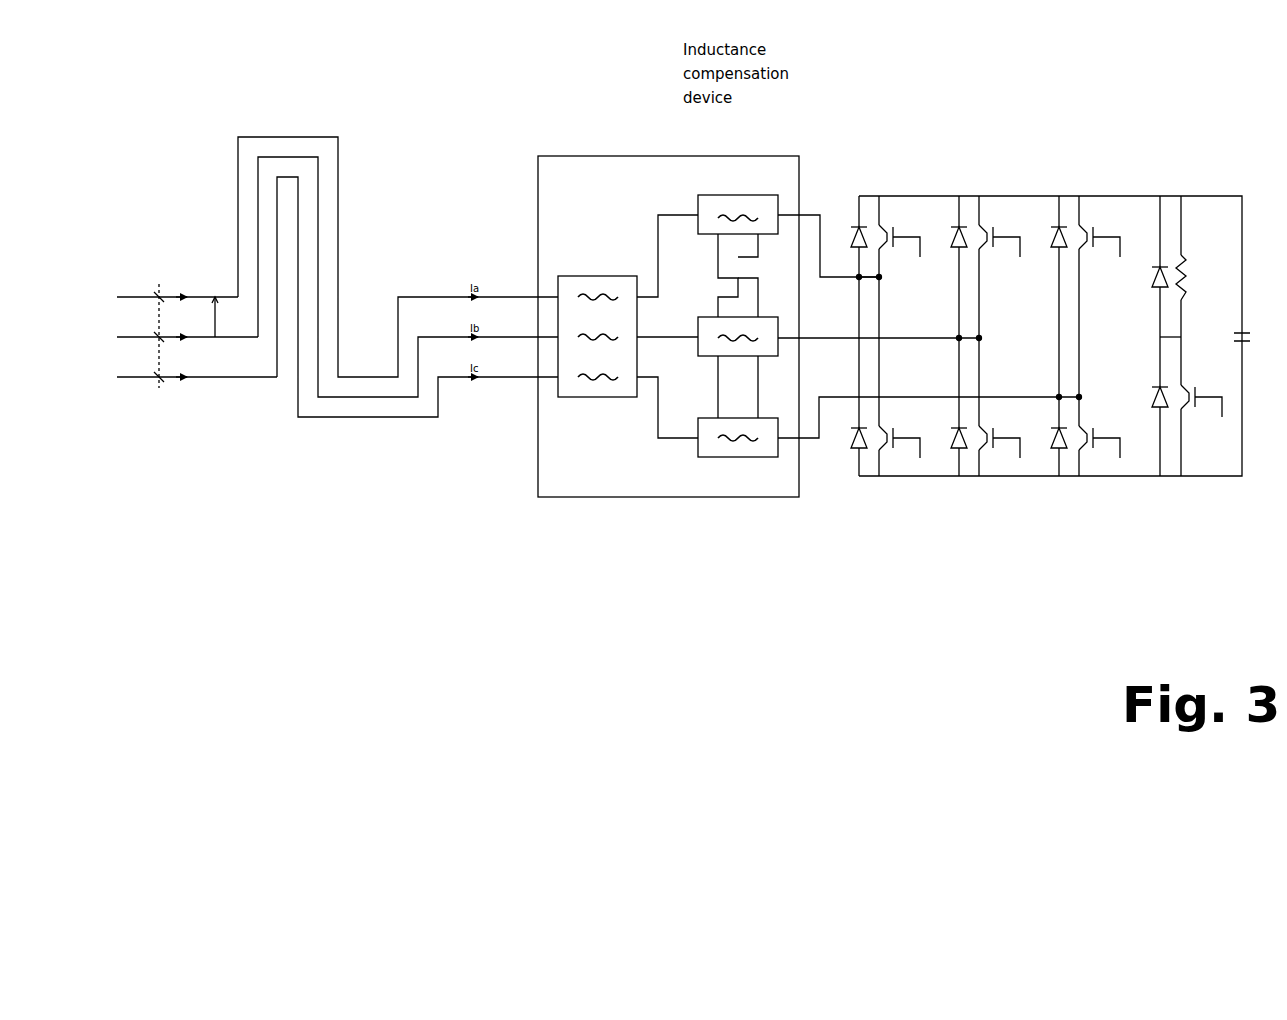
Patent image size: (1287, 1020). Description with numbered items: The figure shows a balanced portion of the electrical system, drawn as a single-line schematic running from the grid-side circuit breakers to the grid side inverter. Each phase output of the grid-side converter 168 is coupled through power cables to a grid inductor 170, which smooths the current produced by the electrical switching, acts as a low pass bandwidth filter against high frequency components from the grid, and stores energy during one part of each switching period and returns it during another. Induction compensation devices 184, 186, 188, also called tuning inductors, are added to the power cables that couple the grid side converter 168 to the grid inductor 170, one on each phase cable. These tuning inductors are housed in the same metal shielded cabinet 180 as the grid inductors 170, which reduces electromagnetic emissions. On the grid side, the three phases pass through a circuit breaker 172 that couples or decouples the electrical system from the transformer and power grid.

The grid-side converter 168 is at (1050, 311).
The grid inductor 170 is at (610, 265).
The circuit breaker 172 is at (197, 377).
The grid choke cabinet 180 is at (546, 219).
The induction compensation device 184 is at (713, 203).
The induction compensation device 186 is at (772, 320).
The induction compensation device 188 is at (711, 450).